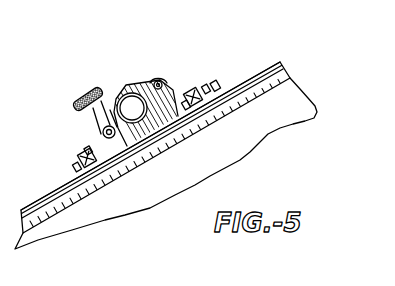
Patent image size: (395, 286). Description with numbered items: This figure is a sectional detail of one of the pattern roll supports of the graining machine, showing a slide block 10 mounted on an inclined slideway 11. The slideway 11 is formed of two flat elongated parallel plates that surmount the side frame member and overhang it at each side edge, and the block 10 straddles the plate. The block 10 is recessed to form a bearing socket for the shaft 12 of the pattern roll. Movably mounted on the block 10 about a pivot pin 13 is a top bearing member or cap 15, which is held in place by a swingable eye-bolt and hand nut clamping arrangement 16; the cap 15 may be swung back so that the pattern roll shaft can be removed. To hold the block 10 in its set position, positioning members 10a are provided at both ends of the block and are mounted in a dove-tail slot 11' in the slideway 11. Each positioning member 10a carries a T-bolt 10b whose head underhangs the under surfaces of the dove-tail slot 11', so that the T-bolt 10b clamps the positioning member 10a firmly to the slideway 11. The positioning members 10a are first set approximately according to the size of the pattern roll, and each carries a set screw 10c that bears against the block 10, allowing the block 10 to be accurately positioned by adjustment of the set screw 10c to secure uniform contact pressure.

The slide block 10 is at (178, 98).
The positioning member 10a is at (198, 88).
The T-bolt 10b is at (218, 118).
The set screw 10c is at (212, 83).
The slideway 11 is at (169, 121).
The dove-tail slot 11' is at (157, 122).
The shaft 12 is at (127, 103).
The pivot pin 13 is at (158, 82).
The top bearing member 15 is at (122, 92).
The eye-bolt and hand nut clamping arrangement 16 is at (96, 113).